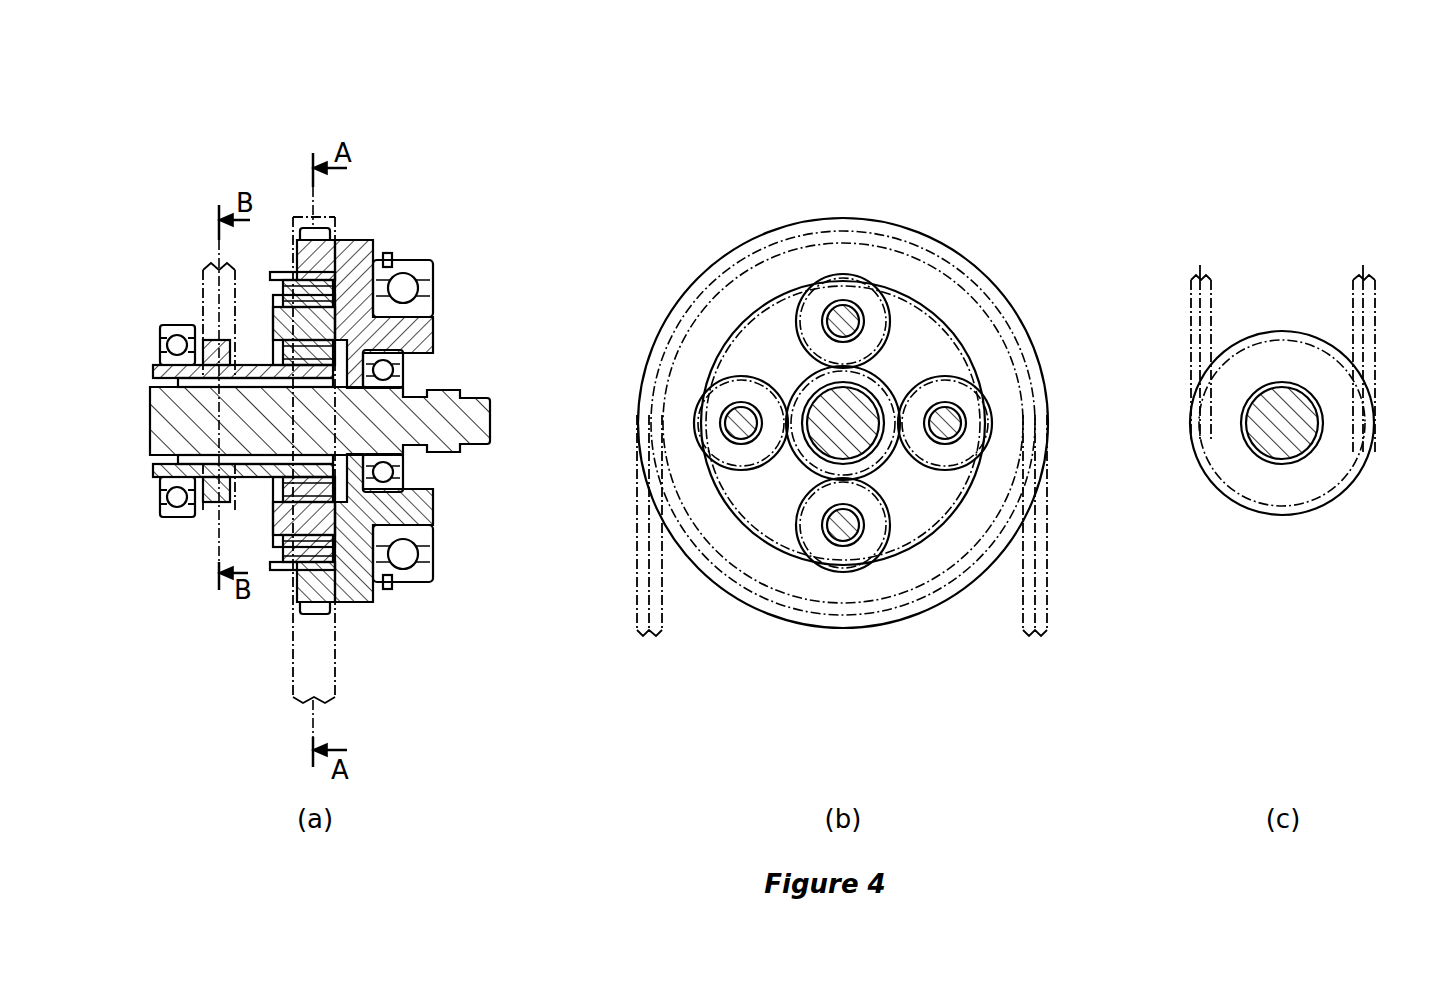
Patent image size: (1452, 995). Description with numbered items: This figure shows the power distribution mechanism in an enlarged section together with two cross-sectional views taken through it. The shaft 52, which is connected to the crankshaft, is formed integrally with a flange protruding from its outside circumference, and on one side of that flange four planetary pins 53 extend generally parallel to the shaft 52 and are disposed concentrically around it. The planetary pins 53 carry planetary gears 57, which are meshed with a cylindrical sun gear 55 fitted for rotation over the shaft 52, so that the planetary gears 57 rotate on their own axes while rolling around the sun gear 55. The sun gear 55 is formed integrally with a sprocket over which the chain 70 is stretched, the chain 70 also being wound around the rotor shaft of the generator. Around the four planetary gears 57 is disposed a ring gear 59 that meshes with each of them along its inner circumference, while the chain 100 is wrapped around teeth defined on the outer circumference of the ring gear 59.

The shaft 52 is at (167, 418).
The planetary pins 53 is at (302, 325).
The sun gear 55 is at (150, 370).
The planetary gears 57 is at (300, 280).
The ring gear 59 is at (423, 333).
The chain 70 is at (202, 271).
The chain 100 is at (335, 687).